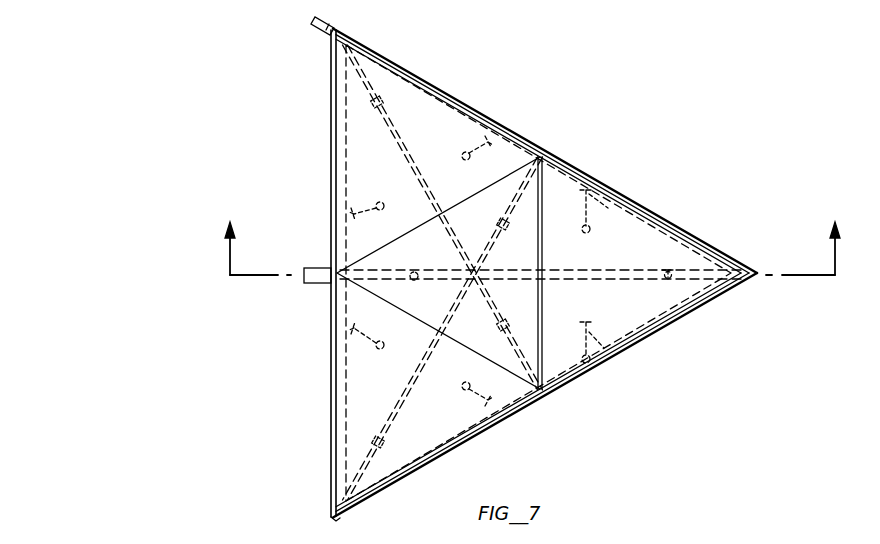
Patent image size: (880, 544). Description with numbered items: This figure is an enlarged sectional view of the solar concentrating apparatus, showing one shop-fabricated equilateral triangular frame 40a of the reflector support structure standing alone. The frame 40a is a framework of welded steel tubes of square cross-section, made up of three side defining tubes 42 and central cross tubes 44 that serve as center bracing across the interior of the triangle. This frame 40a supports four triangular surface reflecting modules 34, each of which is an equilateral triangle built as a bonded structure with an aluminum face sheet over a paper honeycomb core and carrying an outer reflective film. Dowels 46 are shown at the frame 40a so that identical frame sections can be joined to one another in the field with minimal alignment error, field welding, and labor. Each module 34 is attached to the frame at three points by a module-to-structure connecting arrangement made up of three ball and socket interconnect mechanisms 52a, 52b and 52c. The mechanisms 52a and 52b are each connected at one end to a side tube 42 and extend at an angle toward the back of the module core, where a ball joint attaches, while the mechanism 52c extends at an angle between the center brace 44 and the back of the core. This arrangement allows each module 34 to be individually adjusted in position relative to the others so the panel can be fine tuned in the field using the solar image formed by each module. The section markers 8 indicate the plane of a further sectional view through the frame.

The section line 8- 8 is at (529, 237).
The equilateral triangular frame 40a is at (710, 118).
The side defining tube 42 is at (558, 156).
The dowels 46 is at (317, 30).
The surface reflecting module 34 is at (450, 133).
The central cross tube 44 is at (634, 284).
The ball and socket interconnect mechanism 52a is at (595, 372).
The ball and socket interconnect mechanism 52b is at (600, 212).
The ball and socket interconnect mechanism 52c is at (673, 269).